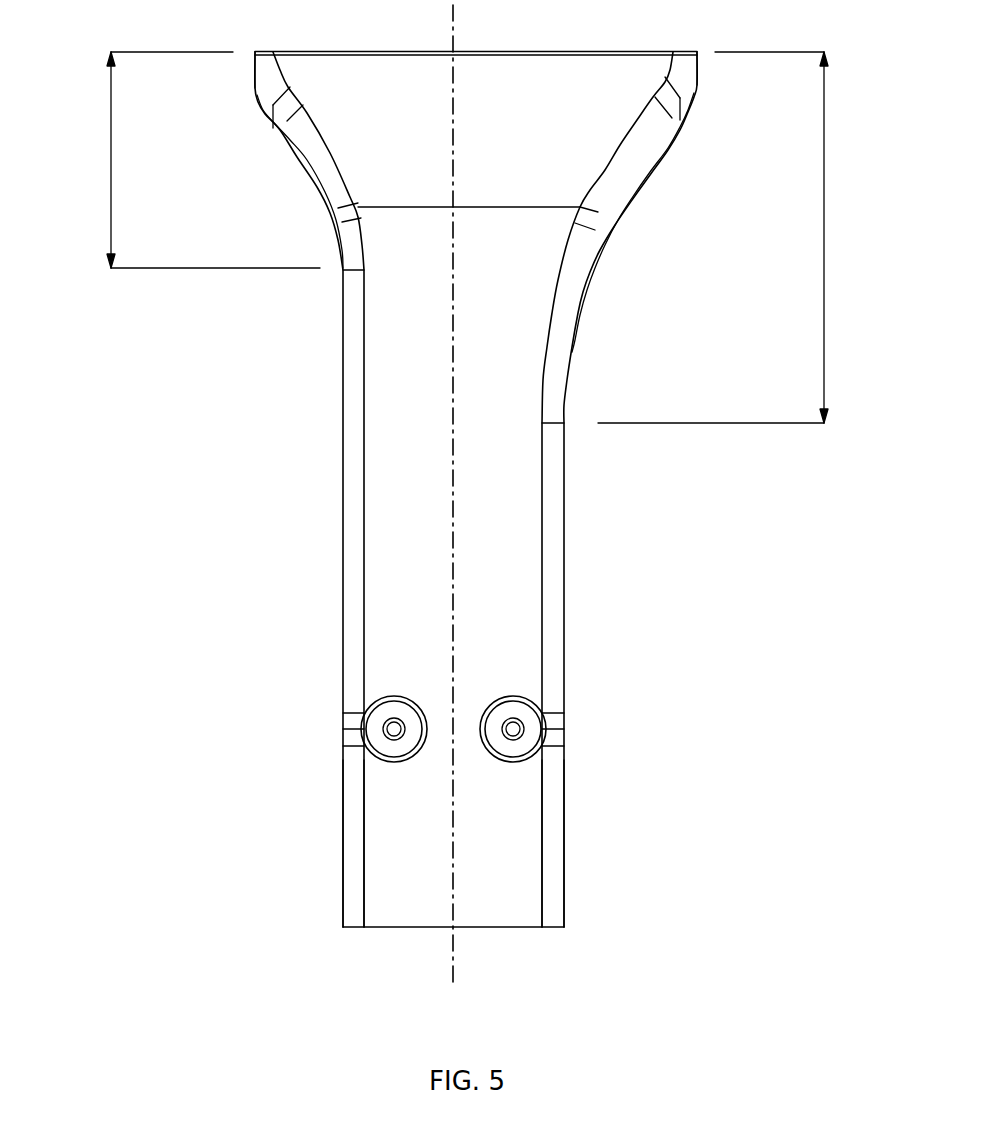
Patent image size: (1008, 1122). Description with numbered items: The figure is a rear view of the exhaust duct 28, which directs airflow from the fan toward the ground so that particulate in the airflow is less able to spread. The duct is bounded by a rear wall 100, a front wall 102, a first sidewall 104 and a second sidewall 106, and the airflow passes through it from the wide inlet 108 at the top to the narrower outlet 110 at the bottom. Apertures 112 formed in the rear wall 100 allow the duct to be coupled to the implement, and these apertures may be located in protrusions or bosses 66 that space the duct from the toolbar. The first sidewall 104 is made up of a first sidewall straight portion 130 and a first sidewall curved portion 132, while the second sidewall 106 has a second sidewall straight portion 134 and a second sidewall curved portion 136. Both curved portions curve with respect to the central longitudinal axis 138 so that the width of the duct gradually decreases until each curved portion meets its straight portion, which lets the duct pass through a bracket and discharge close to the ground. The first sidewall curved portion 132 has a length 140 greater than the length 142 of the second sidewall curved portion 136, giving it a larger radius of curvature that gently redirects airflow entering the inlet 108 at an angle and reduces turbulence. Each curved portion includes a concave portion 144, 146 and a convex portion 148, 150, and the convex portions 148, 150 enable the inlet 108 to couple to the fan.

The exhaust duct 28 is at (806, 465).
The bosses 66 is at (390, 708).
The rear wall 100 is at (375, 885).
The front wall 102 is at (263, 420).
The first sidewall 104 is at (567, 560).
The second sidewall 106 is at (343, 573).
The inlet 108 is at (416, 50).
The outlet 110 is at (412, 928).
The apertures 112 is at (394, 738).
The first sidewall straight portion 130 is at (566, 842).
The first sidewall curved portion 132 is at (618, 238).
The second sidewall straight portion 134 is at (343, 900).
The second sidewall curved portion 136 is at (298, 182).
The central longitudinal axis 138 is at (455, 957).
The length 140 is at (824, 235).
The length 142 is at (111, 158).
The concave portion 144 is at (633, 172).
The concave portion 146 is at (293, 140).
The convex portion 148 is at (700, 85).
The convex portion 150 is at (255, 78).